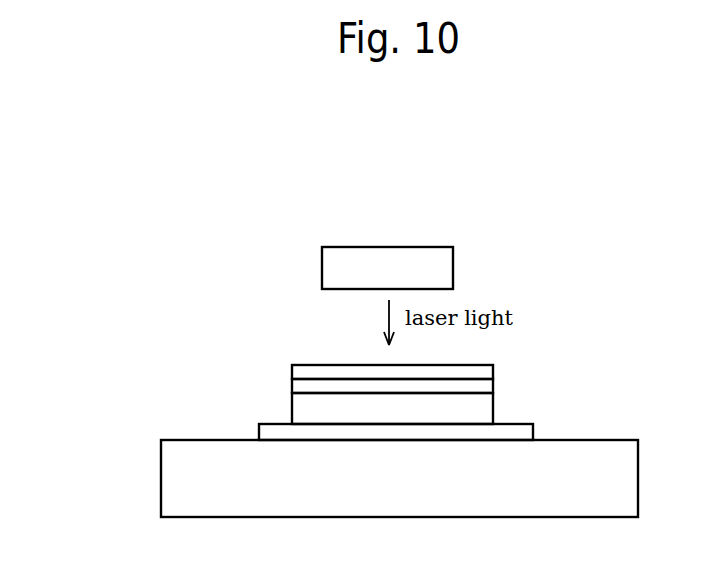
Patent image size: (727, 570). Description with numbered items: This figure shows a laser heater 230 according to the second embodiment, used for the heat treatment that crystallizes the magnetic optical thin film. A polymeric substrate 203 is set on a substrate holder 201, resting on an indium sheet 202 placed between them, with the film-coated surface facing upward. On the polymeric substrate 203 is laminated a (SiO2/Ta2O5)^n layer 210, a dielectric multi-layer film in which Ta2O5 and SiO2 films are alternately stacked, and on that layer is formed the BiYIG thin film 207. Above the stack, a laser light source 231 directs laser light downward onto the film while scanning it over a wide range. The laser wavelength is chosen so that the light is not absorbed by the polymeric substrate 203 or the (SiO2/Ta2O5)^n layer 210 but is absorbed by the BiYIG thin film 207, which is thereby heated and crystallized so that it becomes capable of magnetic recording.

The substrate holder 201 is at (167, 480).
The indium sheet 202 is at (260, 433).
The polymeric substrate 203 is at (493, 405).
The BiYIG thin film 207 is at (497, 365).
The (SiO2/Ta2O5)^n layer 210 is at (493, 385).
The laser heater 230 is at (545, 206).
The laser light source 231 is at (453, 258).